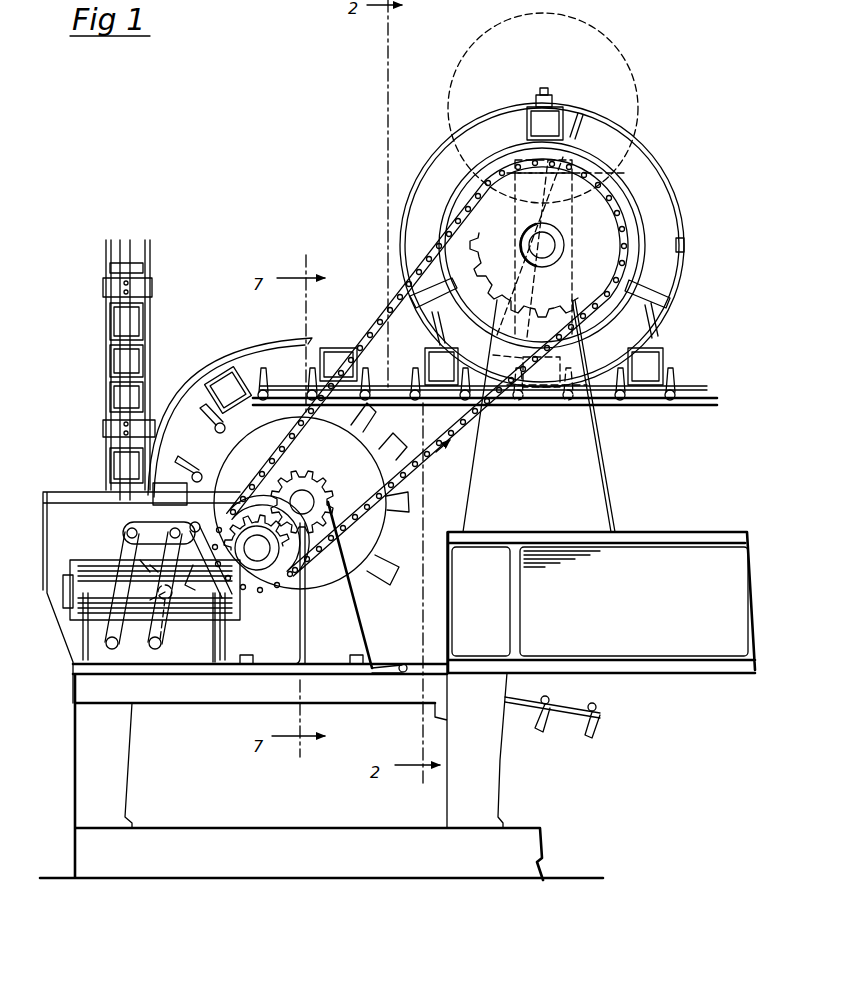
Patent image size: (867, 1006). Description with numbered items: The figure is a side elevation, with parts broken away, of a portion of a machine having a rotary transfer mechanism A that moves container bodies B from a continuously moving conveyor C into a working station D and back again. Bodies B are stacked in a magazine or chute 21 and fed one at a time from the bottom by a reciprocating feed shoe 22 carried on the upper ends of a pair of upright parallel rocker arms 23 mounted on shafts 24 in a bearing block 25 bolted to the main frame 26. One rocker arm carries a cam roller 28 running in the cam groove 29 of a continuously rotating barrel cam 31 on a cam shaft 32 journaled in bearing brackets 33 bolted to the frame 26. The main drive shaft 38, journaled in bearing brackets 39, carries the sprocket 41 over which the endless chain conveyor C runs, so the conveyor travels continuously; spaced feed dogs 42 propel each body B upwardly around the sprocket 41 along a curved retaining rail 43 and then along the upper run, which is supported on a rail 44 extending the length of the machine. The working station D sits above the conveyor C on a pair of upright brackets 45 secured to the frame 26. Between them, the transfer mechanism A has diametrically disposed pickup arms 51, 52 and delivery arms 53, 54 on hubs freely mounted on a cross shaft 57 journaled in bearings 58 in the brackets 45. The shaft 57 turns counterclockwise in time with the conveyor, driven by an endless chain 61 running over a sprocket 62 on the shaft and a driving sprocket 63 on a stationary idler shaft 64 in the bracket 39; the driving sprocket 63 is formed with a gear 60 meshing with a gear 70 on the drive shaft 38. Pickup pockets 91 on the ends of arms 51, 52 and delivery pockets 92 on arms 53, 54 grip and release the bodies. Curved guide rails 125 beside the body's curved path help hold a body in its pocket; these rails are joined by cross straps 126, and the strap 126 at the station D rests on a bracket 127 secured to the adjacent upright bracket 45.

The magazine or chute 21 is at (104, 324).
The reciprocating feed shoe 22 is at (147, 514).
The rocker arms 23 is at (174, 550).
The shafts 24 is at (148, 660).
The bearing block 25 is at (107, 662).
The frame 26 is at (682, 538).
The cam roller 28 is at (175, 628).
The cam groove 29 is at (142, 568).
The barrel cam 31 is at (146, 590).
The cam shaft 32 is at (44, 593).
The bearing brackets 33 is at (80, 566).
The drive shaft 38 is at (304, 495).
The bearing brackets 39 is at (362, 628).
The sprocket 41 is at (382, 564).
The feed dog 42 is at (266, 378).
The curved retaining rail 43 is at (268, 346).
The rail 44 is at (690, 408).
The upright brackets 45 is at (600, 463).
The transfer or pickup arm 51 is at (612, 177).
The transfer or pickup arm 52 is at (520, 273).
The auxiliary transfer or delivery arm 53 is at (515, 168).
The auxiliary transfer or delivery arm 54 is at (552, 294).
The cross shaft or drive member 57 is at (552, 246).
The bearings 58 is at (520, 241).
The gear 60 is at (308, 560).
The endless chain 61 is at (384, 330).
The sprocket 62 is at (592, 228).
The driving sprocket 63 is at (266, 572).
The idler shaft 64 is at (258, 562).
The gear 70 is at (326, 492).
The pickup pockets 91 is at (582, 137).
The delivery pockets 92 is at (574, 128).
The curved guide rails 125 is at (463, 170).
The cross straps 126 is at (534, 100).
The bracket 127 is at (545, 88).
The rotary transfer mechanism A is at (672, 171).
The container bodies B is at (148, 352).
The conveyor C is at (690, 382).
The working station D is at (628, 66).